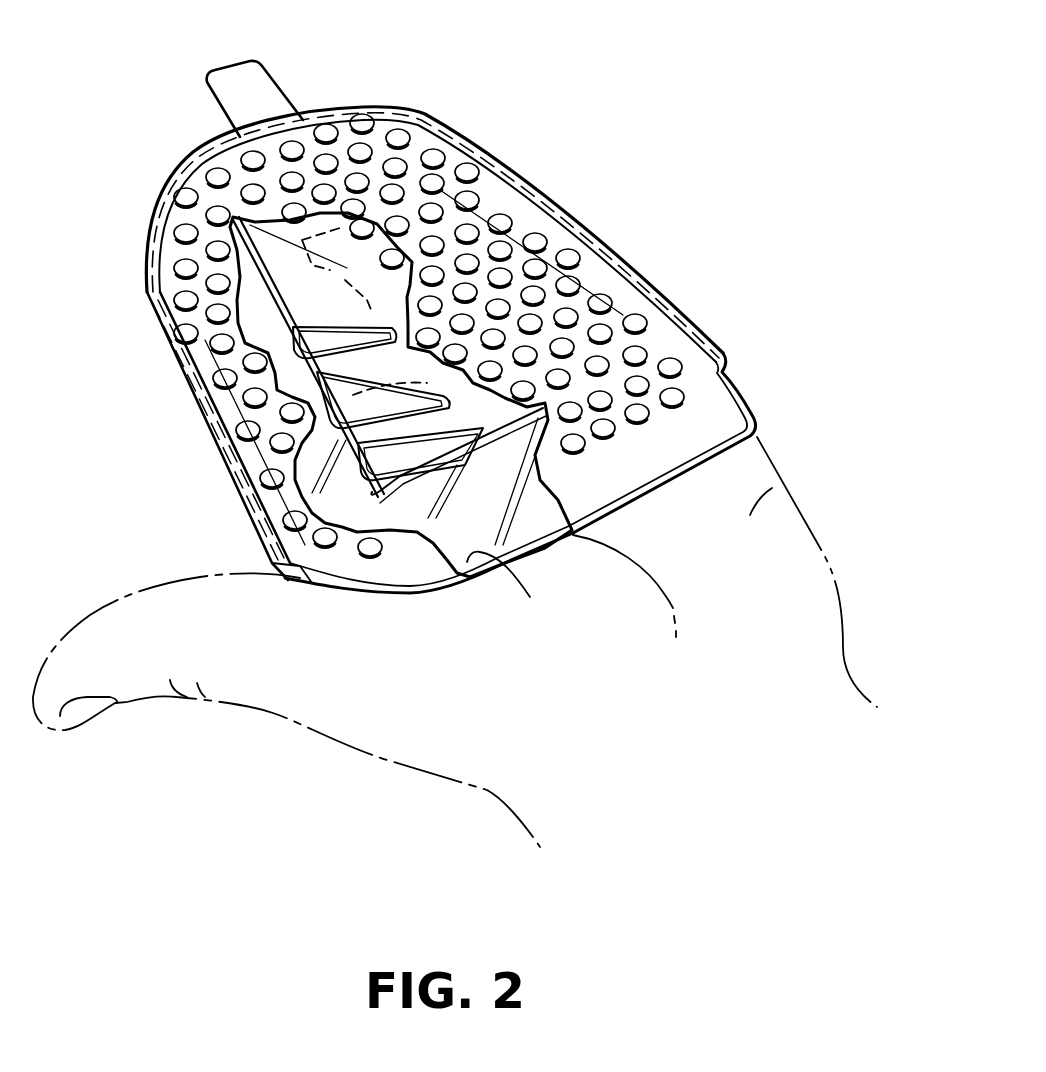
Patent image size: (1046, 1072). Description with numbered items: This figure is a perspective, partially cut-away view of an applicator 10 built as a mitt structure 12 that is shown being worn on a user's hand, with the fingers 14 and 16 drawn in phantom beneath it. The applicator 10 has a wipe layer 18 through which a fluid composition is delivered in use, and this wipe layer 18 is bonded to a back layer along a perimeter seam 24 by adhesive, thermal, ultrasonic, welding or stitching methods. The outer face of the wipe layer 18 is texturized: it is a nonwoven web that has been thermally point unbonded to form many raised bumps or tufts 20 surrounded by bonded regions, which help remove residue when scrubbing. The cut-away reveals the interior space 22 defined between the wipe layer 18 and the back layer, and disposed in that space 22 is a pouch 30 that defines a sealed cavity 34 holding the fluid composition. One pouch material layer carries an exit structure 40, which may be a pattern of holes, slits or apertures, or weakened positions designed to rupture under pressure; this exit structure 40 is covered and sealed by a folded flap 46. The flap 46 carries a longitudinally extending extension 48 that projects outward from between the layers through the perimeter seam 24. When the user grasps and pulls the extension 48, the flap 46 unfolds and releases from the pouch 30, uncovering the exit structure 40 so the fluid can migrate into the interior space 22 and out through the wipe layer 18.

The applicator 10 is at (648, 180).
The mitt structure 12 is at (655, 290).
The finger of hand 14 is at (788, 483).
The back layer 16 is at (498, 572).
The wipe layer 18 is at (513, 197).
The tufts 20 is at (237, 428).
The interior space 22 is at (200, 368).
The perimeter seam 24 is at (704, 325).
The pouch 30 is at (233, 217).
The cavity 34 is at (420, 490).
The exit structure 40 is at (372, 302).
The folded flap 46 is at (233, 233).
The extension 48 is at (238, 92).